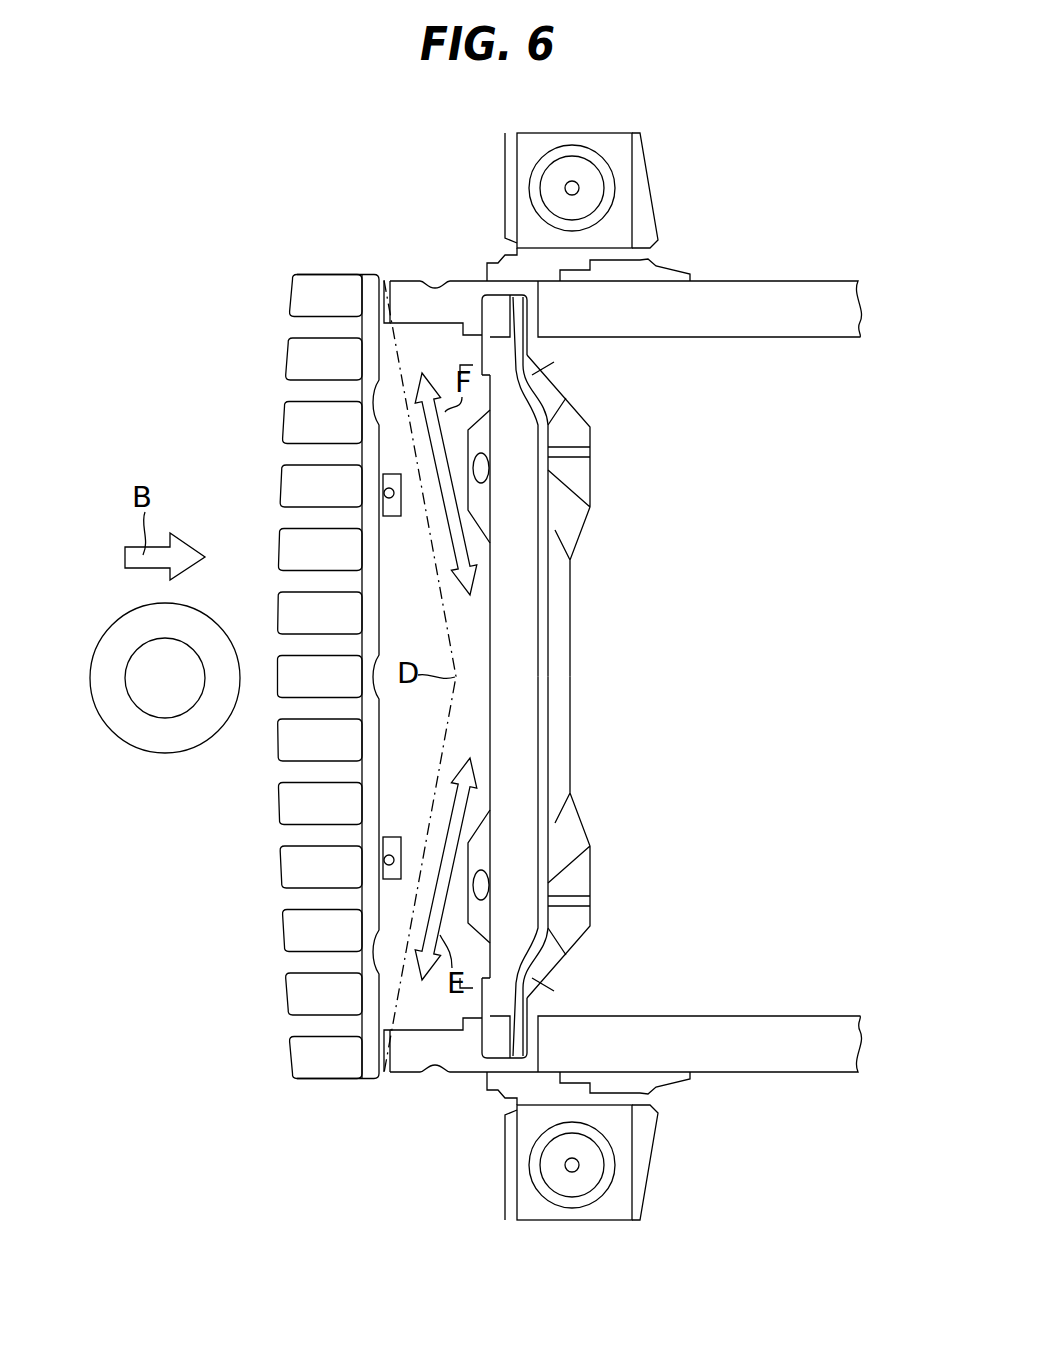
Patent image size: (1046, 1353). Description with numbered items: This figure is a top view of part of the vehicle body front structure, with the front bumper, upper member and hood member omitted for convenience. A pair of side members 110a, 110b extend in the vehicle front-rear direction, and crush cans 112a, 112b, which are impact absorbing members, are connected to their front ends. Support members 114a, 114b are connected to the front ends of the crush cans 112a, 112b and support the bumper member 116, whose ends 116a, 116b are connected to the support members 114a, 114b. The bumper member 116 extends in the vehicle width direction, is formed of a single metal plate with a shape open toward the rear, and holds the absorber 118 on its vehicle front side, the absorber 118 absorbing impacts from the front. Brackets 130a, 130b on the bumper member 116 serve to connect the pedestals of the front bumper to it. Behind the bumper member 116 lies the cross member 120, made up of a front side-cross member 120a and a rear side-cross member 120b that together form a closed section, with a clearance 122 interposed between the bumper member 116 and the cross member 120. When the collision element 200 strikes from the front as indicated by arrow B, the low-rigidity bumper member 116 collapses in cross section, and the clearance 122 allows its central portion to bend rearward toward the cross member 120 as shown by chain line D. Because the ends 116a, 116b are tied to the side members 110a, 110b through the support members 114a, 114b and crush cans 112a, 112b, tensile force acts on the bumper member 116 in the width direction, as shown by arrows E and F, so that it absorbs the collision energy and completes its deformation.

The side member 110a is at (800, 1035).
The side member 110b is at (793, 298).
The crush can 112a is at (412, 1060).
The crush can 112b is at (418, 295).
The support member 114a is at (386, 1070).
The support member 114b is at (387, 285).
The bumper member 116 is at (370, 458).
The end of bumper member 116a is at (371, 1066).
The end of bumper member 116b is at (371, 283).
The absorber 118 is at (300, 804).
The cross member 120 is at (645, 676).
The front side-cross member 120a is at (500, 437).
The rear side-cross member 120b is at (585, 488).
The clearance 122 is at (470, 644).
The bracket 130a is at (385, 862).
The bracket 130b is at (385, 480).
The collision element 200 is at (117, 756).